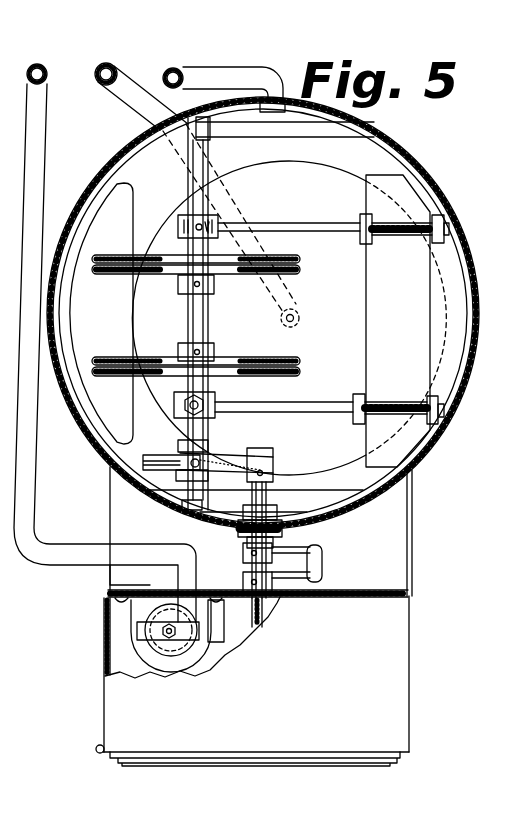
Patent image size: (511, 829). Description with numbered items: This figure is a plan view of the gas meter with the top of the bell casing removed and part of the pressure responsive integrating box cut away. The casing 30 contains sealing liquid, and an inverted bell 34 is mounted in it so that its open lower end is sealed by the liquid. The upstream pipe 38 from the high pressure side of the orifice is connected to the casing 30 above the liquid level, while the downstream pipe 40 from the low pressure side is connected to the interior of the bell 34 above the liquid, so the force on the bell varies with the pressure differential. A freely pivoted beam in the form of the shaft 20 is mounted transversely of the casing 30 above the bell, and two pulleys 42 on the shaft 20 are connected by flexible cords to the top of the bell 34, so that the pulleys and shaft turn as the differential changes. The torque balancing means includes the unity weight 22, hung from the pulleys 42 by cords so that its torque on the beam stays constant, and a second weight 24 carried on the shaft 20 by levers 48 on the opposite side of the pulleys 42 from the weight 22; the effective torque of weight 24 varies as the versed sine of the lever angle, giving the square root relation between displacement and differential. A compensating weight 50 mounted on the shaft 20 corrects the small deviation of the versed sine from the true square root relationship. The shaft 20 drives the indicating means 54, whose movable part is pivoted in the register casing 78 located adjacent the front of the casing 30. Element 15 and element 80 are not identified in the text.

The housing 15 is at (385, 668).
The shaft 20 is at (188, 434).
The weight 22 is at (117, 197).
The second weight 24 is at (412, 196).
The casing 30 is at (388, 152).
The inverted bell 34 is at (355, 178).
The upstream pipe 38 is at (176, 67).
The downstream pipe 40 is at (104, 63).
The pulleys 42 is at (117, 357).
The levers 48 is at (298, 230).
The compensating weight 50 is at (209, 416).
The indicating means 54 is at (394, 711).
The register casing 78 is at (411, 638).
The supply conduit 80 is at (33, 64).